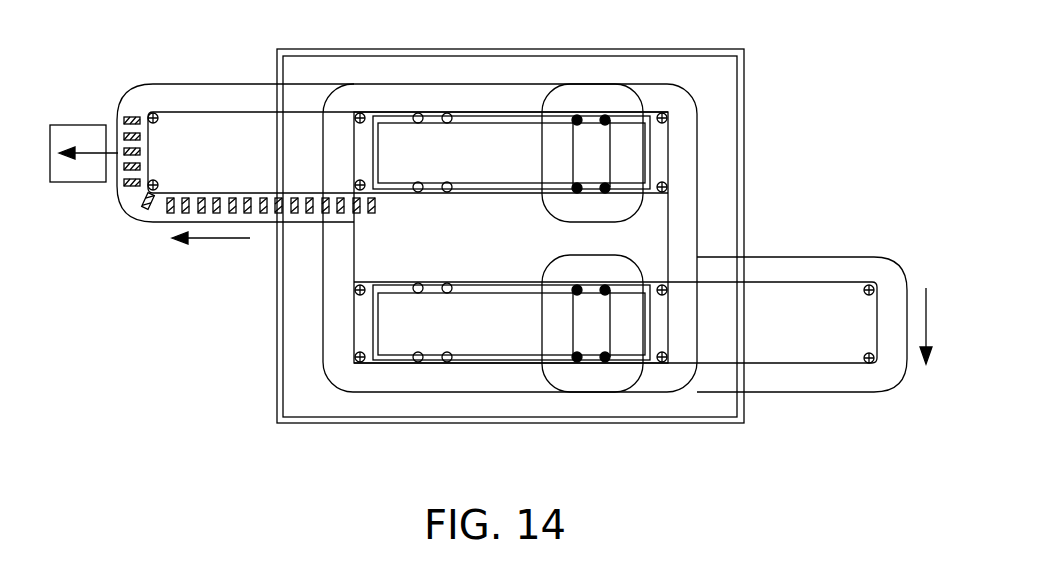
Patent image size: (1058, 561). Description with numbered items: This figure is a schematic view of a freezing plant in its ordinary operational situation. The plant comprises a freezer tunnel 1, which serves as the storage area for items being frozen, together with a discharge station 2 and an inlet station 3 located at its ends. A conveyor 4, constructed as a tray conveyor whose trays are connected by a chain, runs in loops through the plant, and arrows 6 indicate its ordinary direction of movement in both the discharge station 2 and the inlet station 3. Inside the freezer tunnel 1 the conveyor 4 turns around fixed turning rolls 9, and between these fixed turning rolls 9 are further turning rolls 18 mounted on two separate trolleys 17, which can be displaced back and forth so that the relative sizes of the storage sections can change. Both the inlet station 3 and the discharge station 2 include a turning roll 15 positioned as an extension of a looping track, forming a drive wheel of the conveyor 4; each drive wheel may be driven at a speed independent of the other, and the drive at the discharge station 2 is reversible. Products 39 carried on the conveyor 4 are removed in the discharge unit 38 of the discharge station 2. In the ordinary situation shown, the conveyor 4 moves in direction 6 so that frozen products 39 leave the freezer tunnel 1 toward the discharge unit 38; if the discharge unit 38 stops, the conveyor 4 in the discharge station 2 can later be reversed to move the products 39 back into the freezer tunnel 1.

The freezer tunnel 1 is at (515, 47).
The discharge station 2 is at (242, 58).
The inlet station 3 is at (797, 413).
The conveyor 4 is at (167, 104).
The direction of movement 6 is at (215, 240).
The fixed turning rolls 9 is at (664, 112).
The turning roll 15 is at (167, 208).
The trolley 17 is at (592, 107).
The turning rolls 18 is at (606, 186).
The discharge unit 38 is at (67, 130).
The products 39 is at (133, 116).